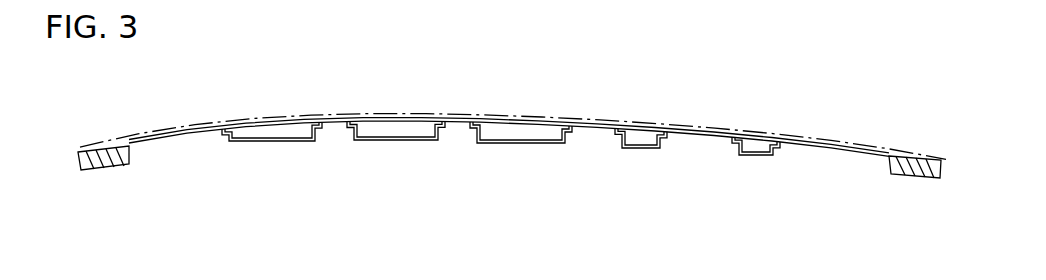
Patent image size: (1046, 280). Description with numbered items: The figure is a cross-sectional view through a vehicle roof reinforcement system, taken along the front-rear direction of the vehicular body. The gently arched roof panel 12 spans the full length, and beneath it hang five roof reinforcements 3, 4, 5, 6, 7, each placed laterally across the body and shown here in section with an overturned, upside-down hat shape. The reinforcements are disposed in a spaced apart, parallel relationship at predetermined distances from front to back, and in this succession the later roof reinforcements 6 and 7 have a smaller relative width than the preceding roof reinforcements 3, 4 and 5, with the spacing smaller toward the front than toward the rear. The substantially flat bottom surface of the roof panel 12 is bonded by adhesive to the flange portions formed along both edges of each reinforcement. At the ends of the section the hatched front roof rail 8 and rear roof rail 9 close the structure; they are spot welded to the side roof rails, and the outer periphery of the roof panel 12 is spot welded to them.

The roof reinforcement 3 is at (283, 142).
The roof reinforcement 4 is at (402, 141).
The roof reinforcement 5 is at (523, 144).
The roof reinforcement 6 is at (643, 149).
The roof reinforcement 7 is at (743, 156).
The front roof rail 8 is at (110, 170).
The rear roof rail 9 is at (910, 178).
The roof panel 12 is at (756, 138).